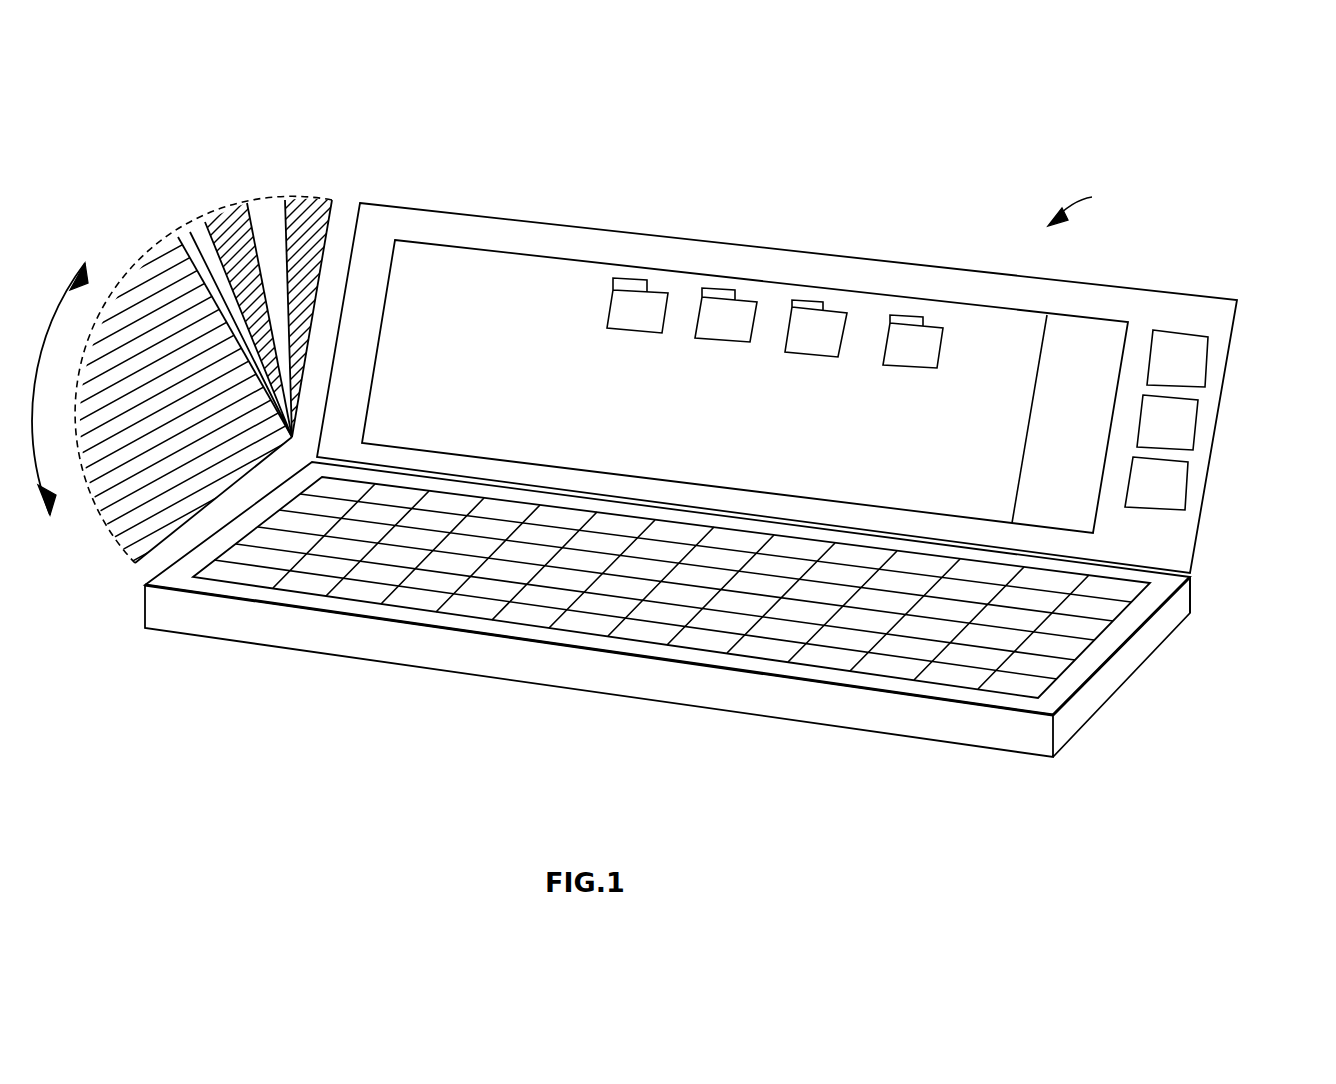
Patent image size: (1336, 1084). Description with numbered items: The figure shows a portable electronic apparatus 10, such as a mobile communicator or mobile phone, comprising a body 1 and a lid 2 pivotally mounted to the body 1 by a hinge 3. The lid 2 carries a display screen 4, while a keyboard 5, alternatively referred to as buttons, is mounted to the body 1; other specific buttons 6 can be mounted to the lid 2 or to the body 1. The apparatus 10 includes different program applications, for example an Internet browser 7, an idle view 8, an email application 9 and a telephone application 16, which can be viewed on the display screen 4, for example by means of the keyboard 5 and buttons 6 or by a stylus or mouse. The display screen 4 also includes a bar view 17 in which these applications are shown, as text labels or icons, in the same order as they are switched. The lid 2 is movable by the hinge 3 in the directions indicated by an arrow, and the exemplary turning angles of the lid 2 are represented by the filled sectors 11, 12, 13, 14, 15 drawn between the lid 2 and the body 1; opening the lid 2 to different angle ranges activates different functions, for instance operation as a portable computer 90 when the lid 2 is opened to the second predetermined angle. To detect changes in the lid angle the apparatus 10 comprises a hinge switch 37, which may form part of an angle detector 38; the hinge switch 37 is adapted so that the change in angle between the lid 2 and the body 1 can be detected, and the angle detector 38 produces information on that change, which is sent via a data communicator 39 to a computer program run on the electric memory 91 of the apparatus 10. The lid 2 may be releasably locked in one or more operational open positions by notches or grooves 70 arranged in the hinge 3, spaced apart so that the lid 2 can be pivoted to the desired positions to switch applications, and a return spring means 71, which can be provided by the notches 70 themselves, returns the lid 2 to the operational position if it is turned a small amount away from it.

The body 1 is at (852, 715).
The lid 2 is at (512, 235).
The hinge 3 is at (1190, 573).
The display screen 4 is at (443, 263).
The keyboard 5 is at (1085, 623).
The specific buttons 6 is at (1180, 355).
The Internet browser 7 is at (646, 310).
The idle view 8 is at (727, 320).
The email application 9 is at (820, 333).
The portable electronic apparatus 10 is at (1091, 201).
The filled sector 11 is at (317, 203).
The filled sector 12 is at (273, 210).
The filled sector 13 is at (227, 227).
The filled sector 14 is at (192, 240).
The filled sector 15 is at (112, 473).
The telephone application 16 is at (917, 347).
The bar view 17 is at (1090, 365).
The hinge switch 37 is at (1192, 590).
The angle detector 38 is at (1193, 585).
The data communicator 39 is at (1158, 630).
The notches or grooves 70 is at (1167, 567).
The return spring means 71 is at (1153, 550).
The portable computer 90 is at (1060, 708).
The electric memory 91 is at (1047, 703).